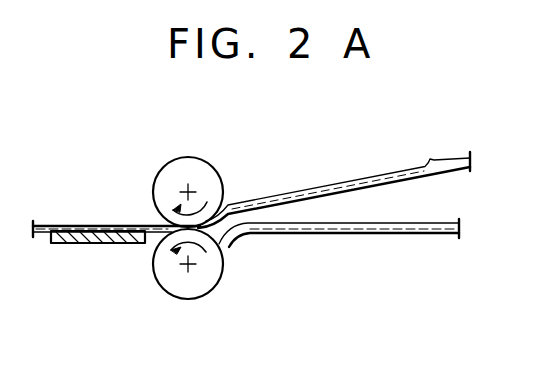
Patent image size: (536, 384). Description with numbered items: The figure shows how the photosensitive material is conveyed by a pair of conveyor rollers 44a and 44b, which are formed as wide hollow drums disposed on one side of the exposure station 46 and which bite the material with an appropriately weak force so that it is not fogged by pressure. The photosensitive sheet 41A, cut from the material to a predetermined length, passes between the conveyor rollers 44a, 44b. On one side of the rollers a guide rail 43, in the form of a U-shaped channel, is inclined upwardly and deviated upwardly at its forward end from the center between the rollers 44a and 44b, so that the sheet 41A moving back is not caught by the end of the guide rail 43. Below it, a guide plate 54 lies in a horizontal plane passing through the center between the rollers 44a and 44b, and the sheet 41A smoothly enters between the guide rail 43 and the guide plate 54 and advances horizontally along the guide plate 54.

The photosensitive sheet 41A is at (55, 225).
The guide rail 43 is at (448, 152).
The conveyor roller 44a is at (190, 157).
The conveyor roller 44b is at (190, 300).
The exposure station 46 is at (93, 245).
The guide plate 54 is at (353, 236).